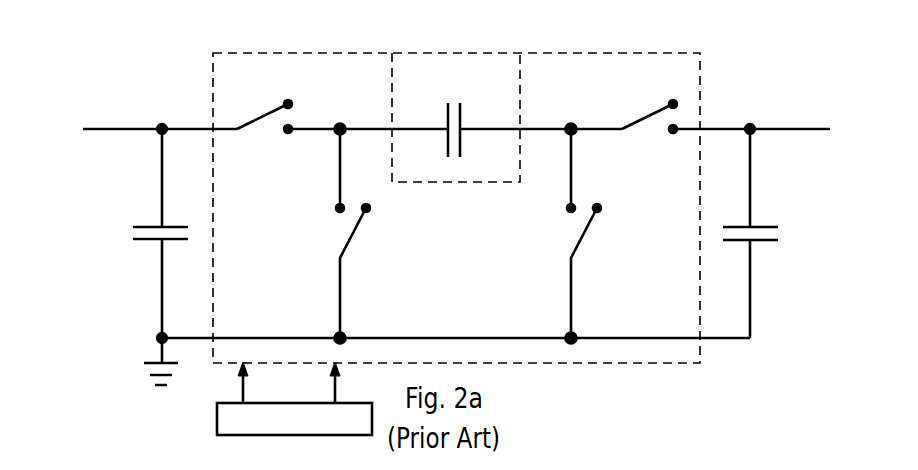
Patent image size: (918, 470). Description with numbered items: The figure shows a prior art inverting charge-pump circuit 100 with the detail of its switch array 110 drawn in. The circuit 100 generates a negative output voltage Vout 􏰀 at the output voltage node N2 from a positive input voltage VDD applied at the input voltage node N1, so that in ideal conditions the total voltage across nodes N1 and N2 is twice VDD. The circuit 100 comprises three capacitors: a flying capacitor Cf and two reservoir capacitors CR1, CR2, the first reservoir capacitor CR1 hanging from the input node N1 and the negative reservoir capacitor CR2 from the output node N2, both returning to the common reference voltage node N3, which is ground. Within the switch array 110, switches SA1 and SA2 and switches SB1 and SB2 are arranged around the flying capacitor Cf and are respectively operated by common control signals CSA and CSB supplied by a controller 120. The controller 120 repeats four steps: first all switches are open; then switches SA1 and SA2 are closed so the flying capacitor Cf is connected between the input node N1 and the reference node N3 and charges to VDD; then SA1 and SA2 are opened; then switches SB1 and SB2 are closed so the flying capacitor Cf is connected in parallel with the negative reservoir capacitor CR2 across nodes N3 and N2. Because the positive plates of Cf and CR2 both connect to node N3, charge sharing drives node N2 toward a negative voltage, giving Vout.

The inverting charge-pump circuit 100 is at (138, 40).
The switch array 110 is at (301, 63).
The controller 120 is at (294, 419).
The input voltage node N1 is at (161, 114).
The output voltage node N2 is at (751, 115).
The common reference voltage node N3 is at (146, 337).
The switch SA1 is at (264, 107).
The switch SB1 is at (334, 234).
The switch SA2 is at (602, 234).
The switch SB2 is at (649, 107).
The flying capacitor Cf is at (445, 112).
The reservoir capacitor CR1 is at (140, 257).
The negative reservoir capacitor CR2 is at (771, 233).
The control signal CSA is at (222, 382).
The control signal CSB is at (317, 382).
The positive input voltage VDD is at (46, 129).
The negative output voltage Vout is at (865, 129).